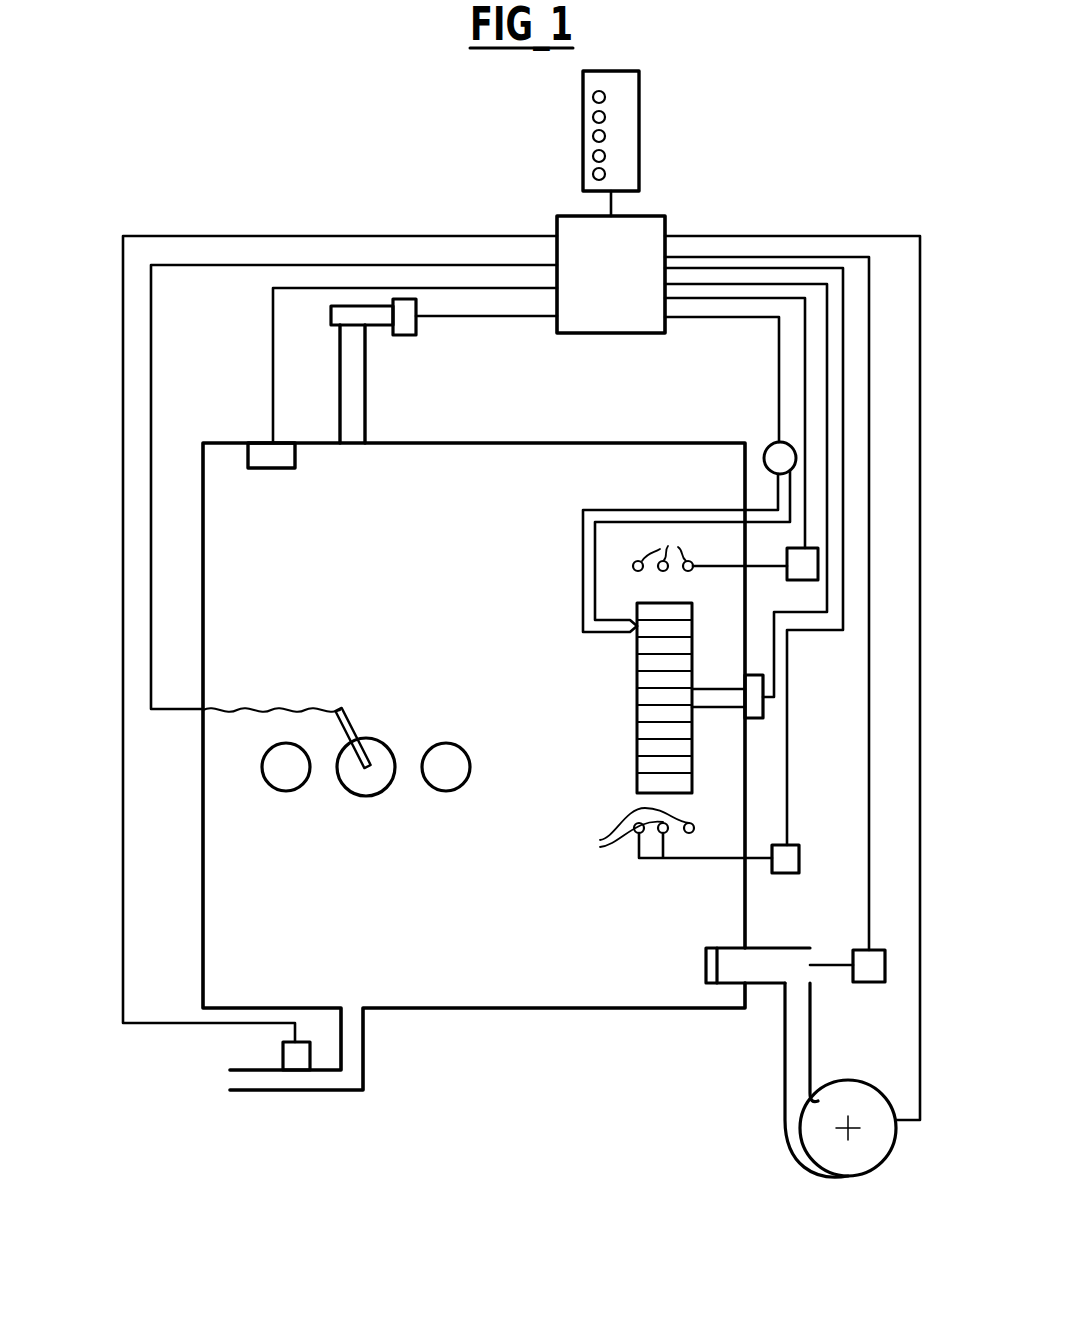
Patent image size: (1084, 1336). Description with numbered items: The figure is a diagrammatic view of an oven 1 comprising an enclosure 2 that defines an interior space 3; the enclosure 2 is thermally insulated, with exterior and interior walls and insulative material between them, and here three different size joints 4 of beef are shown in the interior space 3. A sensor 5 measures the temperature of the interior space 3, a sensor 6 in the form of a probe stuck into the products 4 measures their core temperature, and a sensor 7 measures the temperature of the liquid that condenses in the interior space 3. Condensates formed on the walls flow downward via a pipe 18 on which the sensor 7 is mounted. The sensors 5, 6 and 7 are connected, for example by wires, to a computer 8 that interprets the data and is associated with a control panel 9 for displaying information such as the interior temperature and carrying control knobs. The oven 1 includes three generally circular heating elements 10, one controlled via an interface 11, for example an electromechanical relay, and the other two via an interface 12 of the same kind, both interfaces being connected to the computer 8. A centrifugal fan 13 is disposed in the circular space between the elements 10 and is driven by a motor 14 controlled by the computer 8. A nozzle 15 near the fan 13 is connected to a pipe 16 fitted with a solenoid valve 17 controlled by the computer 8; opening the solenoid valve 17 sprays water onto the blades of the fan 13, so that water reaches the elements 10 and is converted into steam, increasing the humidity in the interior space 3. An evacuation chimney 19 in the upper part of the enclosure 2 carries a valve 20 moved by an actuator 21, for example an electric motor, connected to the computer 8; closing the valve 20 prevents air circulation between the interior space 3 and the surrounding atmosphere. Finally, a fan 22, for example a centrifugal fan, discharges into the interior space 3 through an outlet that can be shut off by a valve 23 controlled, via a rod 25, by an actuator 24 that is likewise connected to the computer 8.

The oven 1 is at (513, 1092).
The enclosure 2 is at (560, 1012).
The interior space 3 is at (498, 787).
The joints of beef 4 is at (440, 791).
The sensor for measuring interior space temperature 5 is at (258, 443).
The sensor for measuring core temperature 6 is at (347, 712).
The sensor for measuring condensate temperature 7 is at (283, 1055).
The computer 8 is at (668, 220).
The control panel 9 is at (641, 110).
The heating elements 10 is at (632, 686).
The interface 11 is at (812, 576).
The interface 12 is at (799, 855).
The centrifugal fan 13 is at (637, 688).
The motor 14 is at (752, 720).
The nozzle 15 is at (632, 638).
The pipe 16 is at (583, 505).
The solenoid valve 17 is at (767, 445).
The pipe 18 is at (363, 1067).
The evacuation chimney 19 is at (366, 405).
The valve 20 is at (353, 306).
The actuator 21 is at (405, 335).
The fan 22 is at (790, 1145).
The valve 23 is at (706, 965).
The actuator 24 is at (869, 982).
The rod 25 is at (776, 963).